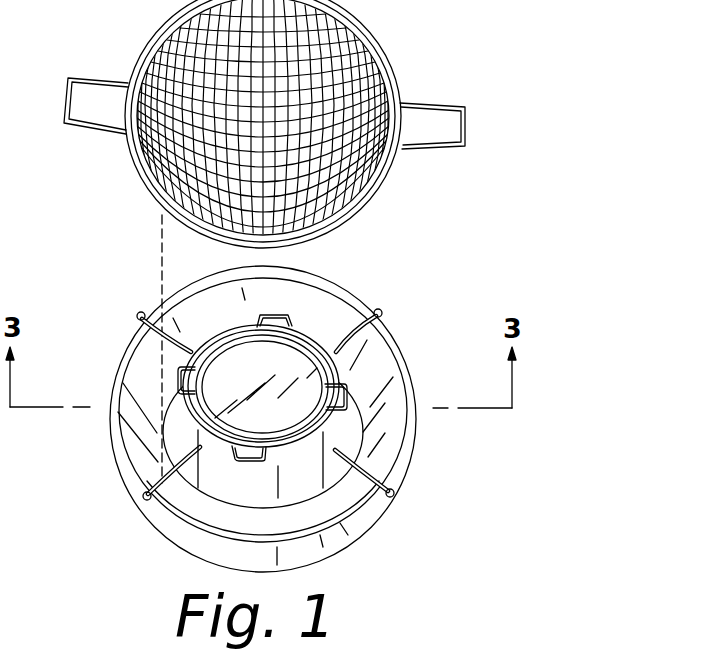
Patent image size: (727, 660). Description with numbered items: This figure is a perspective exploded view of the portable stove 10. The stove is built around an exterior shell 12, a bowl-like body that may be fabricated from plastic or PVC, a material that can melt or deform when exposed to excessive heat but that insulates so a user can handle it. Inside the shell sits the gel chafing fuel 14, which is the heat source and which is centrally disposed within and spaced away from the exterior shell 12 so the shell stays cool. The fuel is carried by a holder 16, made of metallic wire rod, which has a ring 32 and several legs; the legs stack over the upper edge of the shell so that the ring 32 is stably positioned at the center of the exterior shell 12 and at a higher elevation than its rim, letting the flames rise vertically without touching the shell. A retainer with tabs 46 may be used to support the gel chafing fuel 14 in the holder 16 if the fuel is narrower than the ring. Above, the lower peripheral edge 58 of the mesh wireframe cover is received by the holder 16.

The portable stove 10 is at (557, 6).
The exterior shell 12 is at (121, 349).
The gel chafing fuel 14 is at (302, 483).
The holder 16 is at (367, 330).
The ring 32 is at (172, 458).
The tabs 46 is at (352, 405).
The lower peripheral edge 58 is at (170, 40).